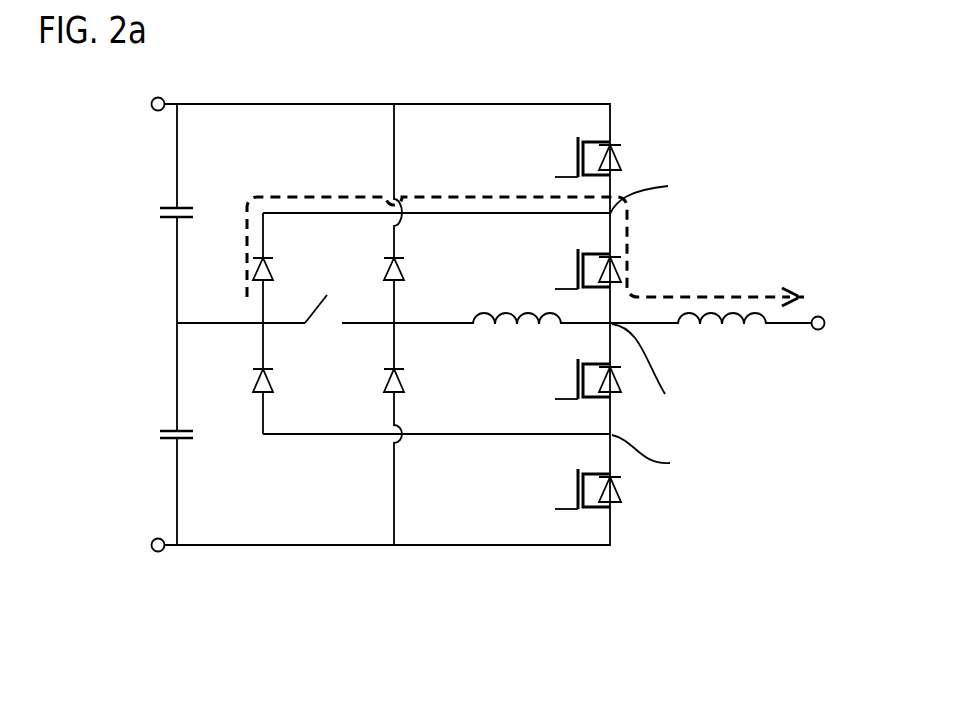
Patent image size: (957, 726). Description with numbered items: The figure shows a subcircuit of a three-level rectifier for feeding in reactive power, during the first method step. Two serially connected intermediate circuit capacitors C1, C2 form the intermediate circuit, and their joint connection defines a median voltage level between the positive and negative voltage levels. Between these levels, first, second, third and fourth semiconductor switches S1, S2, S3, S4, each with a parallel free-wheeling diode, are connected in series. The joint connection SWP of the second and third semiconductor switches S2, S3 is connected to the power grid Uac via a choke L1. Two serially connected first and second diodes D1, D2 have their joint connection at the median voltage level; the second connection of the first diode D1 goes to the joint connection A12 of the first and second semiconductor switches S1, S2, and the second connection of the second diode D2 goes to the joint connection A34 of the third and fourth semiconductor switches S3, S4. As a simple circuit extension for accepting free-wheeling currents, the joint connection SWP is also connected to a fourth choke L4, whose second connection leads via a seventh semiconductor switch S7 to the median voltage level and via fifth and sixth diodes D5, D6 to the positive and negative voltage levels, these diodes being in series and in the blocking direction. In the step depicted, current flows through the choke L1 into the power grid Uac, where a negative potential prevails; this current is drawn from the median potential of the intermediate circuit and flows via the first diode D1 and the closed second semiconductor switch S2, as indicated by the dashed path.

The intermediate circuit capacitor C1 is at (158, 214).
The intermediate circuit capacitor C2 is at (158, 439).
The first diode D1 is at (282, 270).
The second diode D2 is at (283, 389).
The fifth diode D5 is at (413, 270).
The sixth diode D6 is at (413, 389).
The seventh semiconductor switch S7 is at (322, 328).
The first semiconductor switch S1 is at (580, 157).
The second semiconductor switch S2 is at (580, 269).
The third semiconductor switch S3 is at (579, 379).
The fourth semiconductor switch S4 is at (579, 489).
The fourth choke L4 is at (516, 340).
The choke L1 is at (722, 338).
The power grid Uac is at (836, 350).
The joint connection of first and second semiconductor switches A12 is at (662, 186).
The joint connection of second and third semiconductor switches SWP is at (667, 373).
The joint connection of third and fourth semiconductor switches A34 is at (667, 457).